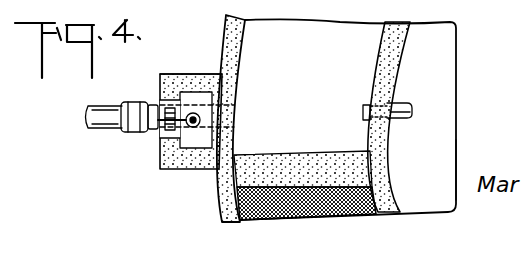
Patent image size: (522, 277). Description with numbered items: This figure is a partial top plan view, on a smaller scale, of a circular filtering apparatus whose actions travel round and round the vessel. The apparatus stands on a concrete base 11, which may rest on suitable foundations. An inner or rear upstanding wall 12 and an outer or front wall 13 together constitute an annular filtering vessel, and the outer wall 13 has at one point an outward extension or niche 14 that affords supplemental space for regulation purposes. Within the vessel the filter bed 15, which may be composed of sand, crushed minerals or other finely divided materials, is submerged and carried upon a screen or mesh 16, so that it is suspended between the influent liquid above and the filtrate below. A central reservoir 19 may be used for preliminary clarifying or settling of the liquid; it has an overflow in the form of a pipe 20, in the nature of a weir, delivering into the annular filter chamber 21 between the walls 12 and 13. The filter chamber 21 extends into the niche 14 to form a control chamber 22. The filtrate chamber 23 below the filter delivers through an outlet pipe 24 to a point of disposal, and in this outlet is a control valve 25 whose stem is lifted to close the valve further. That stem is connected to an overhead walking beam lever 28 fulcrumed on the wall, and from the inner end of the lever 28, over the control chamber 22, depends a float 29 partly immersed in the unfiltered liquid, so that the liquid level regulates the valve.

The concrete base 11 is at (311, 27).
The inner or rear upstanding wall 12 is at (401, 47).
The outer or front wall 13 is at (229, 27).
The outward extension or niche 14 is at (183, 79).
The filter bed 15 is at (286, 153).
The screen or mesh 16 is at (298, 202).
The central reservoir 19 is at (443, 158).
The overflow pipe 20 is at (399, 120).
The annular filter chamber 21 is at (333, 93).
The control chamber 22 is at (202, 142).
The filtrate chamber 23 is at (313, 77).
The outlet pipe 24 is at (101, 124).
The control valve 25 is at (132, 106).
The walking beam lever 28 is at (158, 93).
The float 29 is at (176, 139).